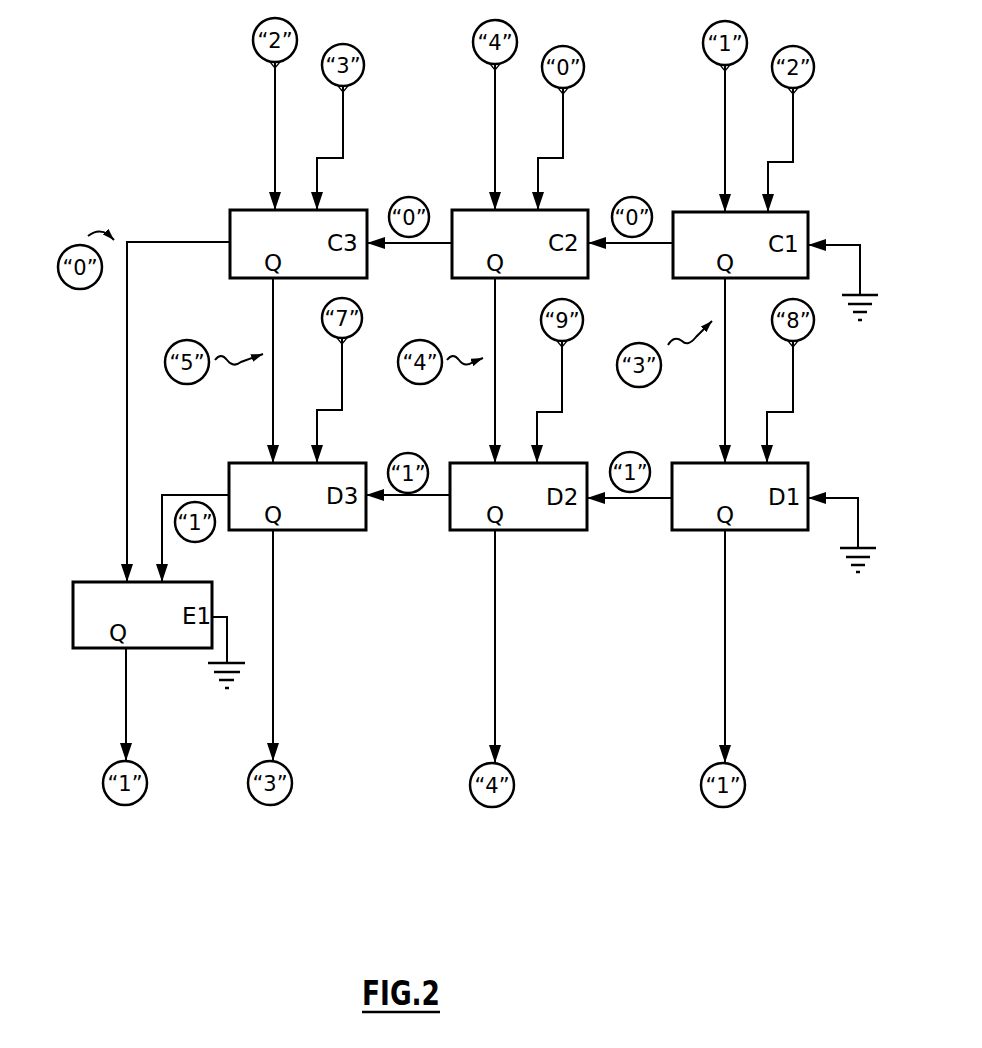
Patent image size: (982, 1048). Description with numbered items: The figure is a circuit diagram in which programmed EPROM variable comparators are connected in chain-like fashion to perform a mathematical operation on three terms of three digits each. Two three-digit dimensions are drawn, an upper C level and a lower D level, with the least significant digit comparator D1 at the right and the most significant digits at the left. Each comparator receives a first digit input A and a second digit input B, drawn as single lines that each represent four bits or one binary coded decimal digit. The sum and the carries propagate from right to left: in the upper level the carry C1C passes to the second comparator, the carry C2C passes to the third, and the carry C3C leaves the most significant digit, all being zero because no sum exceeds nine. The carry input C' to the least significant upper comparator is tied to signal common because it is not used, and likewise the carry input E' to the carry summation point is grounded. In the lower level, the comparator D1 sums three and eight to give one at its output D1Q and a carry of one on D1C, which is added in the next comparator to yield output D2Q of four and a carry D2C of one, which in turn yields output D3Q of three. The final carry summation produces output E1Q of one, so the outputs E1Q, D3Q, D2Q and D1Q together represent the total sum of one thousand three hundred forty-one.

The A input A is at (269, 172).
The B input B is at (322, 172).
The carry output of C3 C3C is at (188, 240).
The carry output of C2 C2C is at (418, 248).
The carry output of C1 C1C is at (638, 250).
The carry input to C1 C' is at (849, 251).
The variable comparator D1 is at (835, 484).
The carry output of D2 D2C is at (408, 508).
The carry output of D1 D1C is at (636, 510).
The carry input to E1 E' is at (212, 666).
The output of E1 E1Q is at (106, 802).
The output of D3 D3Q is at (252, 804).
The output of D2 D2Q is at (474, 804).
The output of D1 D1Q is at (708, 804).